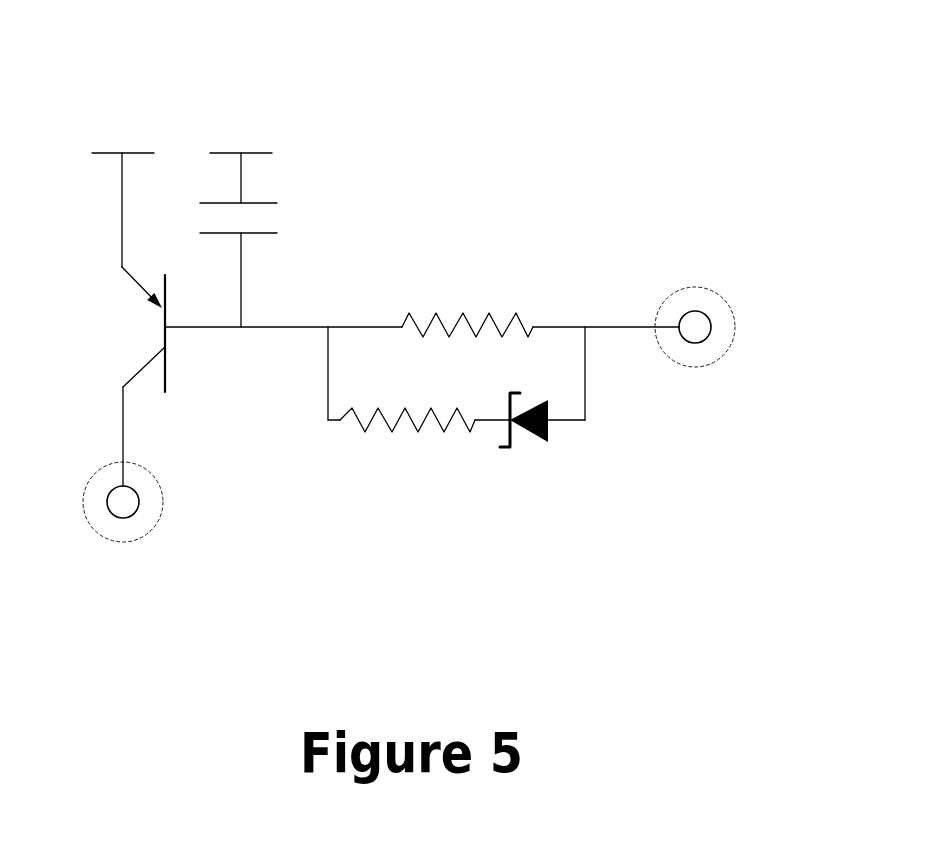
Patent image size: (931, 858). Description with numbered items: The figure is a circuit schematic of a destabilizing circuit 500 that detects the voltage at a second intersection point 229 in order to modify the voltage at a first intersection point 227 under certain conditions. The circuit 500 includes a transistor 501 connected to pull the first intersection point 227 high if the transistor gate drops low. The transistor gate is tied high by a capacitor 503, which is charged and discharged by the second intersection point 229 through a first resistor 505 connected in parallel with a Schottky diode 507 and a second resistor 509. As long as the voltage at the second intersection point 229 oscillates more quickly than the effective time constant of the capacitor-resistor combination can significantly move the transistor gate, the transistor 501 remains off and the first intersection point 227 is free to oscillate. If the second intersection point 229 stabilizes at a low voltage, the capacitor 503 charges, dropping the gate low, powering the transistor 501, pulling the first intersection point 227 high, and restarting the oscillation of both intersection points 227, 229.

The destabilizing circuit 500 is at (438, 108).
The transistor 501 is at (138, 325).
The capacitor 503 is at (277, 218).
The first resistor 505 is at (462, 315).
The Schottky diode 507 is at (545, 443).
The second resistor 509 is at (417, 435).
The first intersection point 227 is at (97, 533).
The second intersection point 229 is at (723, 355).